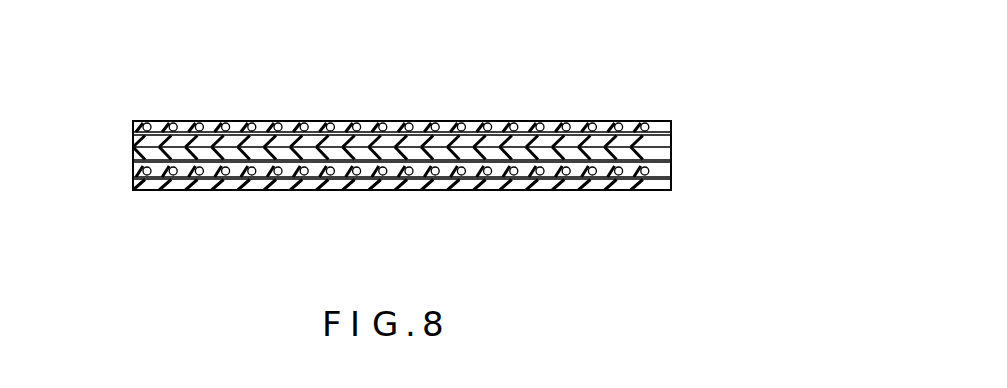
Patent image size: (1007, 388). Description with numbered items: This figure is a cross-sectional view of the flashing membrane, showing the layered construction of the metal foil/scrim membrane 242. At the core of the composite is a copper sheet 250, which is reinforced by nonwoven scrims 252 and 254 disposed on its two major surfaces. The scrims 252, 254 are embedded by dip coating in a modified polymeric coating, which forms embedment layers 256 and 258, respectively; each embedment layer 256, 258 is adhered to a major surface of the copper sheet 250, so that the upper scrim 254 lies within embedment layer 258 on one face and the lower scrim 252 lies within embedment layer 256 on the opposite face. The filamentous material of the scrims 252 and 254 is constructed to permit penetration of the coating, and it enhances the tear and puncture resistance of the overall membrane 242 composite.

The metal foil/scrim membrane 242 is at (383, 121).
The copper sheet 250 is at (133, 155).
The nonwoven scrim 252 is at (197, 177).
The nonwoven scrim 254 is at (187, 121).
The embedment layer 256 is at (135, 188).
The embedment layer 258 is at (265, 121).